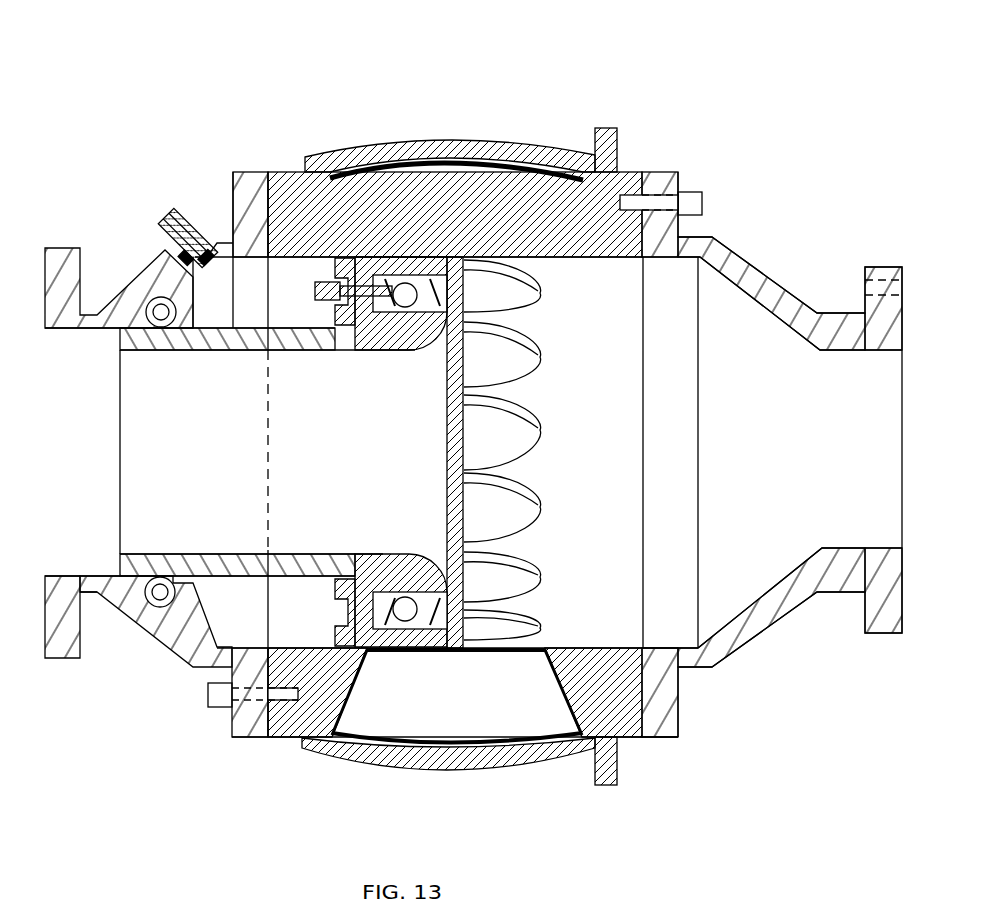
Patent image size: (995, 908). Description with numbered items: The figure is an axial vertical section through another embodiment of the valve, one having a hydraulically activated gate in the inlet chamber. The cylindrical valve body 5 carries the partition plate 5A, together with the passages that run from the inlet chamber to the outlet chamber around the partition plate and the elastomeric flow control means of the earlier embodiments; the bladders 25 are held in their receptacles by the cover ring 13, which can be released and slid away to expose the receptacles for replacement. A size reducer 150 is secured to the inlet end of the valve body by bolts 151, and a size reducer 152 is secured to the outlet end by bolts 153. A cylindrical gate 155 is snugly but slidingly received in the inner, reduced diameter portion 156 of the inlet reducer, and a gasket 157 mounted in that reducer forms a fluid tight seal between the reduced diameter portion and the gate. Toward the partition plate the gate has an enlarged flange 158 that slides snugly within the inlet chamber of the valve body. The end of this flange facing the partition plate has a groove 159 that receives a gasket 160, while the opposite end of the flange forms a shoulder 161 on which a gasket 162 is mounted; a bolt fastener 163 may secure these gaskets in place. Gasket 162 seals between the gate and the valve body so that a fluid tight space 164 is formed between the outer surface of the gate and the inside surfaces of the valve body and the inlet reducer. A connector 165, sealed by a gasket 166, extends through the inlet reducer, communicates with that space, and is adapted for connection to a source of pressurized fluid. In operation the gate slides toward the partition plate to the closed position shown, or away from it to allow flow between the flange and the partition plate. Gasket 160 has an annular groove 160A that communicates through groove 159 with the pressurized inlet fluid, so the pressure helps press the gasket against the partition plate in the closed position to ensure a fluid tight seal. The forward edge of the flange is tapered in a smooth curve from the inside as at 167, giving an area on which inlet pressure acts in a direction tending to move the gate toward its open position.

The valve body 5 is at (287, 172).
The partition plate 5A is at (453, 447).
The cover ring 13 is at (352, 148).
The bladders 25 is at (540, 150).
The size reducer 150 is at (157, 647).
The bolts 151 is at (220, 703).
The size reducer 152 is at (668, 698).
The bolts 153 is at (665, 200).
The cylindrical gate 155 is at (143, 552).
The reduced diameter portion 156 is at (55, 595).
The gasket 157 is at (150, 298).
The enlarged flange 158 is at (422, 640).
The groove 159 is at (443, 590).
The gasket 160 is at (390, 620).
The annular groove 160A is at (407, 307).
The shoulder 161 is at (368, 590).
The gasket 162 is at (343, 612).
The bolt fastener 163 is at (364, 273).
The fluid tight space 164 is at (238, 280).
The connector 165 is at (163, 217).
The gasket 166 is at (200, 217).
The tapered forward edge 167 is at (437, 332).